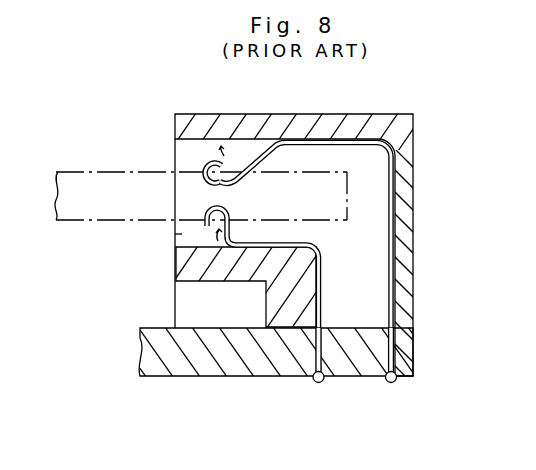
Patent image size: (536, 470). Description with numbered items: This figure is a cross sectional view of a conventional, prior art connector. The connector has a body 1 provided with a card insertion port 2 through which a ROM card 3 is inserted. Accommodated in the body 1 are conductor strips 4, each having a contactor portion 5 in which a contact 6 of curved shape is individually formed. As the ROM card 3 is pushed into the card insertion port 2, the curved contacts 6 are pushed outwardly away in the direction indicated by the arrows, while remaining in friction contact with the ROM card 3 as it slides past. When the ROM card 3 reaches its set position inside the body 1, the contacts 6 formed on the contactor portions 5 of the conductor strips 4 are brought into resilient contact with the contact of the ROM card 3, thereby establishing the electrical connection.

The body 1 is at (414, 233).
The card insertion port 2 is at (175, 236).
The ROM card 3 is at (84, 222).
The conductor strips 4 is at (396, 275).
The contactor portions 5 is at (235, 249).
The contacts 6 is at (226, 186).